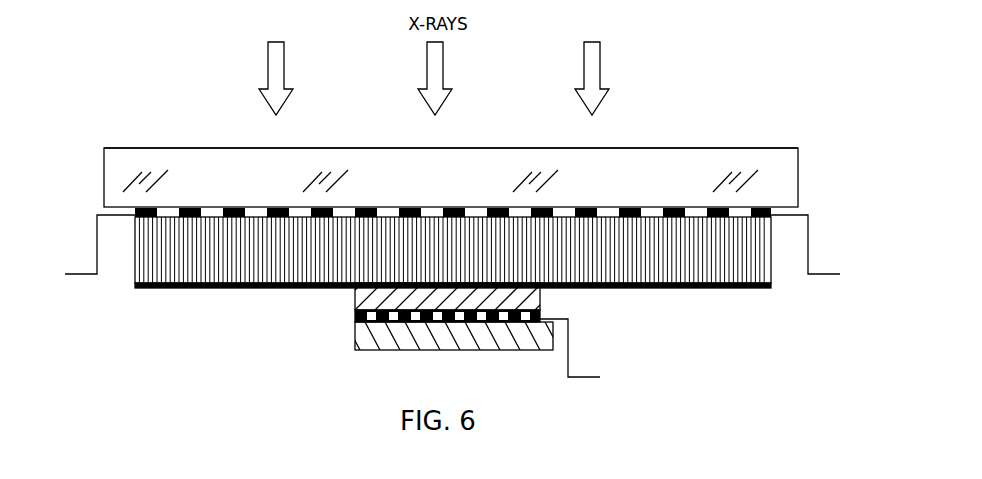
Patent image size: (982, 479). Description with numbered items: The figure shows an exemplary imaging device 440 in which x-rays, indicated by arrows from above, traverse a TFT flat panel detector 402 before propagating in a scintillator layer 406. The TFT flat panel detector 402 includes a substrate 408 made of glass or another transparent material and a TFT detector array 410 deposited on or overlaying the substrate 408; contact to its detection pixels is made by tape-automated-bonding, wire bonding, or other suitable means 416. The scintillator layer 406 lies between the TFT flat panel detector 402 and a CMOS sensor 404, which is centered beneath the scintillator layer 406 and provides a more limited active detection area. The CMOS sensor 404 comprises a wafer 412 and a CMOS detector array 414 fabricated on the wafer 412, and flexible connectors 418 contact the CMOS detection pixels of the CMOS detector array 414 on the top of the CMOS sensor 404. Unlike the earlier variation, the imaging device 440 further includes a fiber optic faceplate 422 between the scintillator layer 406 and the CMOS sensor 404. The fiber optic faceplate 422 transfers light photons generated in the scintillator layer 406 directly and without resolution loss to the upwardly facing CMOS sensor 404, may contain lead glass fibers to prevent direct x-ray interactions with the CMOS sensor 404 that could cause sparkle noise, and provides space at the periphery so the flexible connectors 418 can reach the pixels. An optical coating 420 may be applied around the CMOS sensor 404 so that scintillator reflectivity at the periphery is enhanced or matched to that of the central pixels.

The TFT flat panel detector 402 is at (817, 148).
The CMOS sensor 404 is at (573, 310).
The scintillator layer 406 is at (771, 272).
The substrate 408 is at (140, 147).
The TFT detector array 410 is at (192, 208).
The wafer 412 is at (355, 346).
The CMOS detector array 414 is at (355, 318).
The bonding means 416 is at (828, 272).
The flexible connectors 418 is at (590, 378).
The optical coating 420 is at (181, 288).
The fiber optic faceplate 422 is at (355, 300).
The imaging device 440 is at (735, 400).